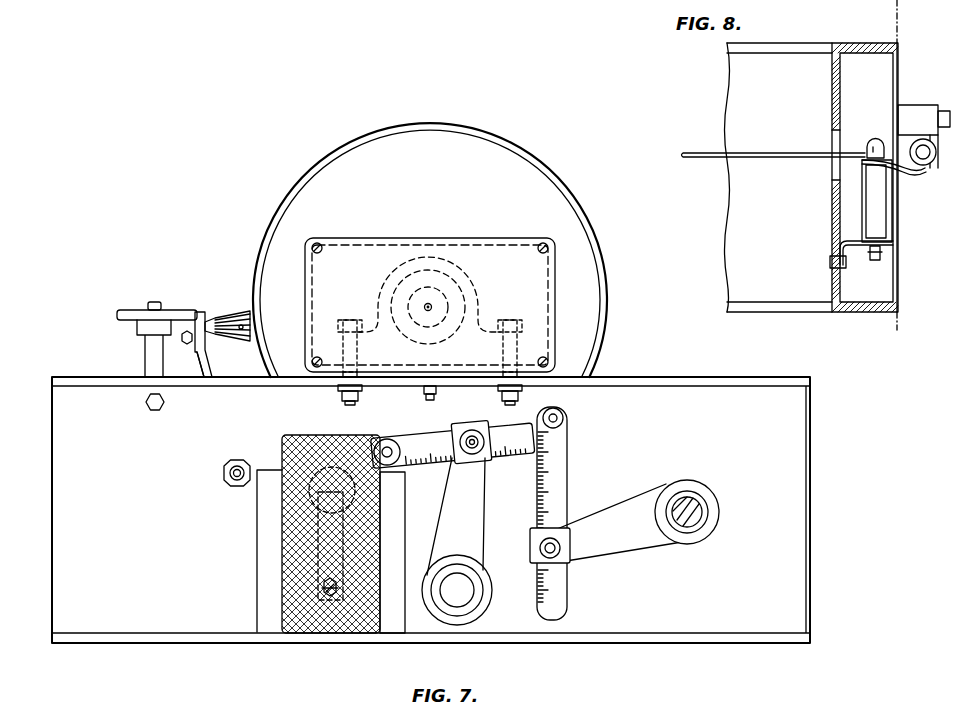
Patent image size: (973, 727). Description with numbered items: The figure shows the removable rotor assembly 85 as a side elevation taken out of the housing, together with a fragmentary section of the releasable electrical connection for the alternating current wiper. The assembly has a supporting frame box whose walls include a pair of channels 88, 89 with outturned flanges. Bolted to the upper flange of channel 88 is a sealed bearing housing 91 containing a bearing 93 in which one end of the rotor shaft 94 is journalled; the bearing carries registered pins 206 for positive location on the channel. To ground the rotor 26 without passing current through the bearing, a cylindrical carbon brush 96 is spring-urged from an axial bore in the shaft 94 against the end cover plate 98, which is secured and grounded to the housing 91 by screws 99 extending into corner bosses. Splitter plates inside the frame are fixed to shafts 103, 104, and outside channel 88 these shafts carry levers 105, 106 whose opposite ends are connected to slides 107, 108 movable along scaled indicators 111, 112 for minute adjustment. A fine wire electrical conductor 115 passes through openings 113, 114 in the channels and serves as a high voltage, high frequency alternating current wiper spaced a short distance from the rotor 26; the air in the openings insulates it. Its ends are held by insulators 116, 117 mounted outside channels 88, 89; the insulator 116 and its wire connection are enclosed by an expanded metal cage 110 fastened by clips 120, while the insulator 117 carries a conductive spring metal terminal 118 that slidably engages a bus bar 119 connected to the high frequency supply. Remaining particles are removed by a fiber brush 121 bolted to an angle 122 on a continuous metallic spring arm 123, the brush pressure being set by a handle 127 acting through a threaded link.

In FIG. 7, the rotor 26 is at (592, 229).
In FIG. 7, the removable rotor assembly 85 is at (226, 263).
In FIG. 7, the channel 88 is at (668, 375).
In FIG. 8, the channel 89 is at (832, 92).
In FIG. 7, the bearing housing 91 is at (494, 237).
In FIG. 7, the bearing 93 is at (470, 280).
In FIG. 7, the rotor shaft 94 is at (440, 323).
In FIG. 7, the cylindrical carbon brush 96 is at (432, 305).
In FIG. 7, the end cover plate 98 is at (430, 305).
In FIG. 7, the screws 99 is at (318, 246).
In FIG. 7, the shaft 103 is at (702, 512).
In FIG. 7, the shaft 104 is at (472, 598).
In FIG. 7, the lever 105 is at (636, 553).
In FIG. 7, the lever 106 is at (483, 521).
In FIG. 7, the slide 107 is at (540, 552).
In FIG. 7, the slide 108 is at (472, 426).
In FIG. 7, the expanded metal cage 110 is at (292, 587).
In FIG. 7, the indicator 111 is at (538, 483).
In FIG. 7, the indicator 112 is at (412, 443).
In FIG. 7, the opening 113 is at (330, 466).
In FIG. 8, the opening 114 is at (832, 172).
In FIG. 8, the fine wire electrical conductor 115 is at (800, 145).
In FIG. 7, the insulator 116 is at (306, 544).
In FIG. 8, the insulator 117 is at (890, 214).
In FIG. 8, the conductive spring metal terminal 118 is at (906, 174).
In FIG. 8, the bus bar 119 is at (930, 165).
In FIG. 7, the clips 120 is at (257, 513).
In FIG. 7, the brush 121 is at (216, 320).
In FIG. 7, the angle 122 is at (198, 312).
In FIG. 7, the continuous metallic spring arm 123 is at (207, 369).
In FIG. 7, the handle 127 is at (128, 301).
In FIG. 7, the registered pins 206 is at (428, 395).